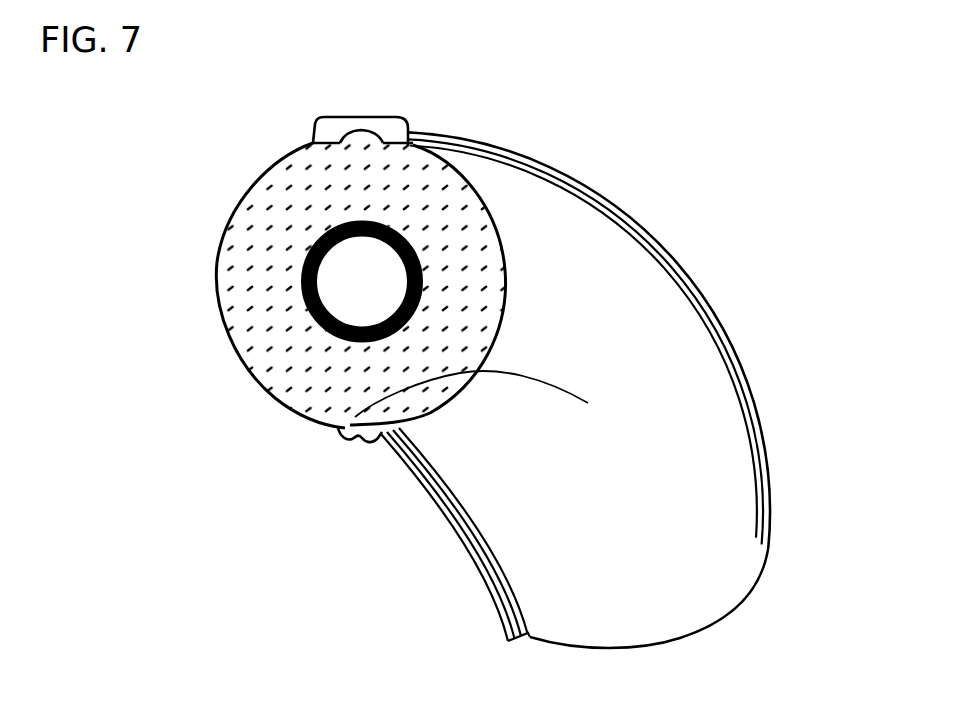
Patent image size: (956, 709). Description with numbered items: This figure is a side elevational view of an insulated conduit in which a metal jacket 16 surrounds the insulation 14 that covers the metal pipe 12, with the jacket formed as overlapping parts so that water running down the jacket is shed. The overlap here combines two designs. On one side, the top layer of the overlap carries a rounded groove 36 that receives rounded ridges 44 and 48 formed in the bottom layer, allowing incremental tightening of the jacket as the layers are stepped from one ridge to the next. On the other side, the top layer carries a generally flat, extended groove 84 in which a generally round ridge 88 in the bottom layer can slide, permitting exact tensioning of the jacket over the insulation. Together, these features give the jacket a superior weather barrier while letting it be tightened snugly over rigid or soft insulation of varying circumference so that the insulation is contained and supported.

The metal pipe 12 is at (335, 342).
The insulation 14 is at (252, 320).
The metal jacket 16 is at (773, 391).
The rounded groove 36 is at (341, 440).
The rounded ridge 44 is at (488, 399).
The rounded ridge 48 is at (362, 442).
The flat extended groove 84 is at (368, 117).
The round ridge 88 is at (348, 138).